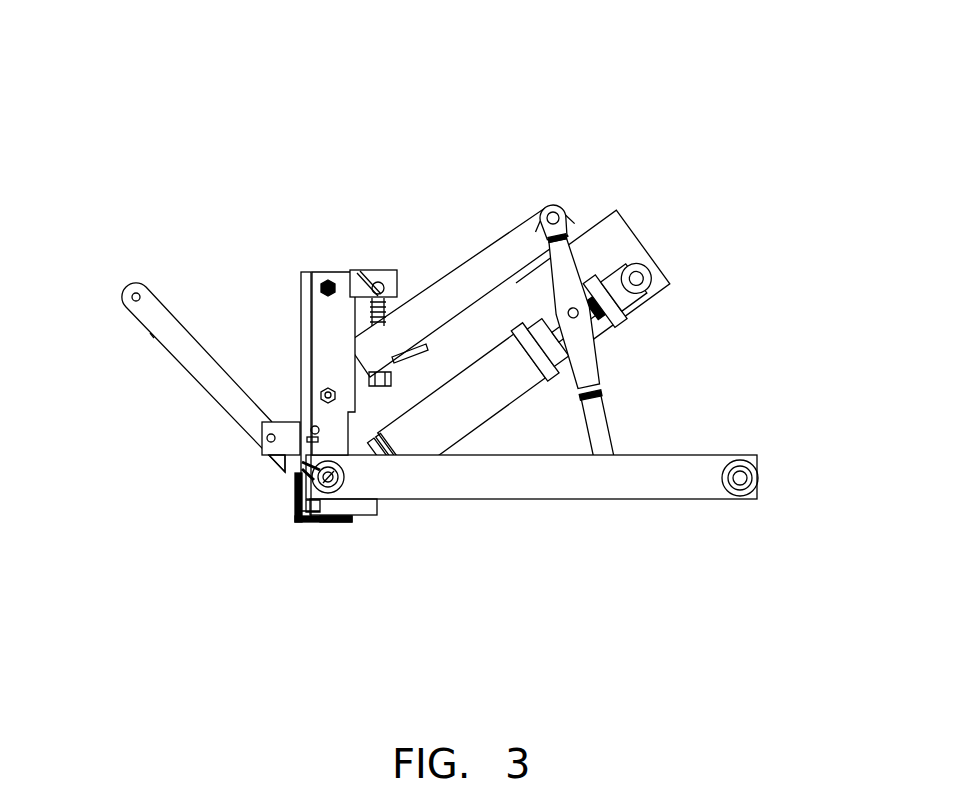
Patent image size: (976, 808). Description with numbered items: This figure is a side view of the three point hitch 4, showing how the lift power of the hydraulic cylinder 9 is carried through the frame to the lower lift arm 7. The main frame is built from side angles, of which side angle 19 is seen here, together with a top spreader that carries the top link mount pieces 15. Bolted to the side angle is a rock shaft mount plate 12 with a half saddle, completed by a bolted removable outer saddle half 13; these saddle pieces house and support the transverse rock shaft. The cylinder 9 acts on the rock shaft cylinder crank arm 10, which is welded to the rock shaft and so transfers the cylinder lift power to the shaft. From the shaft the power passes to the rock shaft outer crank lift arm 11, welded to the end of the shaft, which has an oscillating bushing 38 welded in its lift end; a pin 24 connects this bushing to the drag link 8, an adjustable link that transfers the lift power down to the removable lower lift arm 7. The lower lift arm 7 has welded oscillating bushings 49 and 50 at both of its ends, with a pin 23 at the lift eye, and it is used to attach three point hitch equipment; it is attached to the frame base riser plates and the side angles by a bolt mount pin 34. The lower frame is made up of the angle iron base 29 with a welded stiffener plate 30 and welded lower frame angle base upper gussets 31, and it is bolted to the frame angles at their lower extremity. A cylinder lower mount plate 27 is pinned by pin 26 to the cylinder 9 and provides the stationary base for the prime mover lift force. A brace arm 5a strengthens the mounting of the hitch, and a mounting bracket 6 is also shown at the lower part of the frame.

The hitch mast assembly 4 is at (282, 277).
The lift arm 5a is at (169, 377).
The mounting bracket 6 is at (185, 438).
The lower lift arm 7 is at (531, 534).
The drag link 8 is at (695, 333).
The cylinder 9 is at (713, 304).
The rock shaft cylinder crank arm 10 is at (690, 283).
The rock shaft outer crank lift arm 11 is at (645, 139).
The rock shaft mount plate 12 is at (278, 280).
The removable outer saddle half 13 is at (469, 246).
The top link mount piece 15 is at (429, 166).
The side angle 19 is at (183, 369).
The pin 23 is at (721, 439).
The pin 24 is at (707, 187).
The pin 26 is at (734, 283).
The cylinder lower mount plate 27 is at (399, 556).
The angle iron base 29 is at (200, 543).
The stiffener plate 30 is at (281, 556).
The lower frame angle base upper gusset 31 is at (173, 483).
The bolt mount pin 34 is at (385, 599).
The oscillating bushing 38 is at (707, 153).
The oscillating bushing 49 is at (198, 513).
The oscillating bushing 50 is at (794, 536).